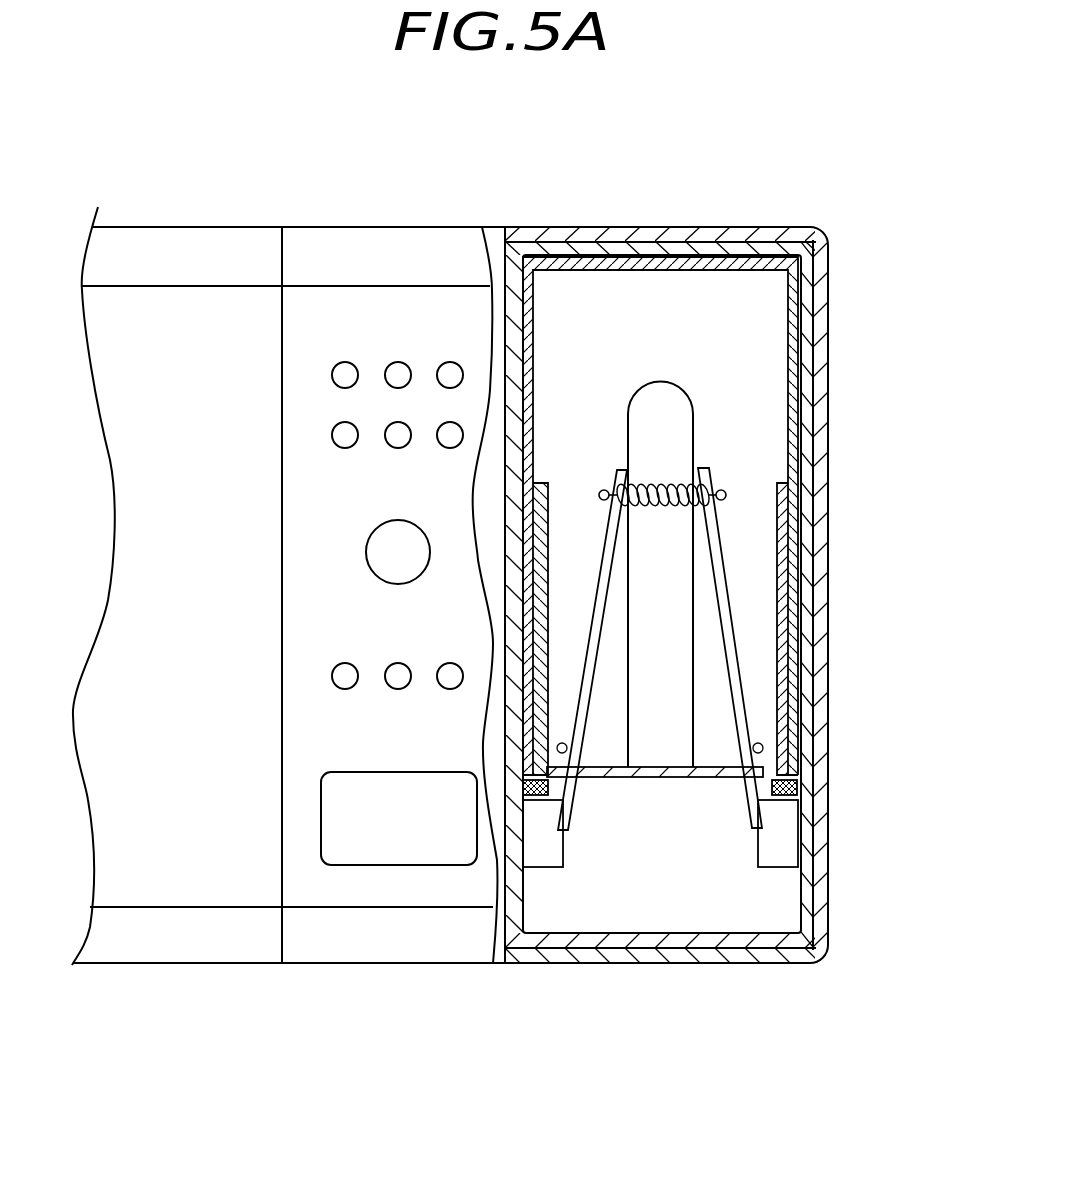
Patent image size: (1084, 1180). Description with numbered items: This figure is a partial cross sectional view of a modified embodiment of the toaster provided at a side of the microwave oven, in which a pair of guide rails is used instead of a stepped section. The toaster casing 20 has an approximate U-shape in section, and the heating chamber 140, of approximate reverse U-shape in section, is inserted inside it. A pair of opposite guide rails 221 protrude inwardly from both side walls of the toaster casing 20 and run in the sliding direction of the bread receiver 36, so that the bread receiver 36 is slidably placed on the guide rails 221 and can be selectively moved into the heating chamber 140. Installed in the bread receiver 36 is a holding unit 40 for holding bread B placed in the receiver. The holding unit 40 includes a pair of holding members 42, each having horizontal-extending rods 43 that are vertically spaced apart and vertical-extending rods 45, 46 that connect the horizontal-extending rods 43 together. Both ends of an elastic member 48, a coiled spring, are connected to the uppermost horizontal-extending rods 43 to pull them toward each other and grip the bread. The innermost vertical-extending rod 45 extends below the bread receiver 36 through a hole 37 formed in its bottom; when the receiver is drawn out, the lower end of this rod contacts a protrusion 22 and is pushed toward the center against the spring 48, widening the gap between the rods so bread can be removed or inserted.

The toaster casing 20 is at (805, 733).
The heating chamber 140 is at (790, 288).
The bread receiver 36 is at (783, 677).
The hole 37 is at (573, 770).
The guide rails 221 is at (800, 788).
The protrusion 22 is at (787, 838).
The bottle B is at (680, 407).
The holding unit 40 is at (744, 761).
The vertical-extending rod 45 is at (583, 718).
The right lever arm 46 is at (740, 727).
The elastic member 48 is at (658, 494).
The holding member 42 is at (603, 488).
The horizontal-extending rod 43 is at (716, 493).